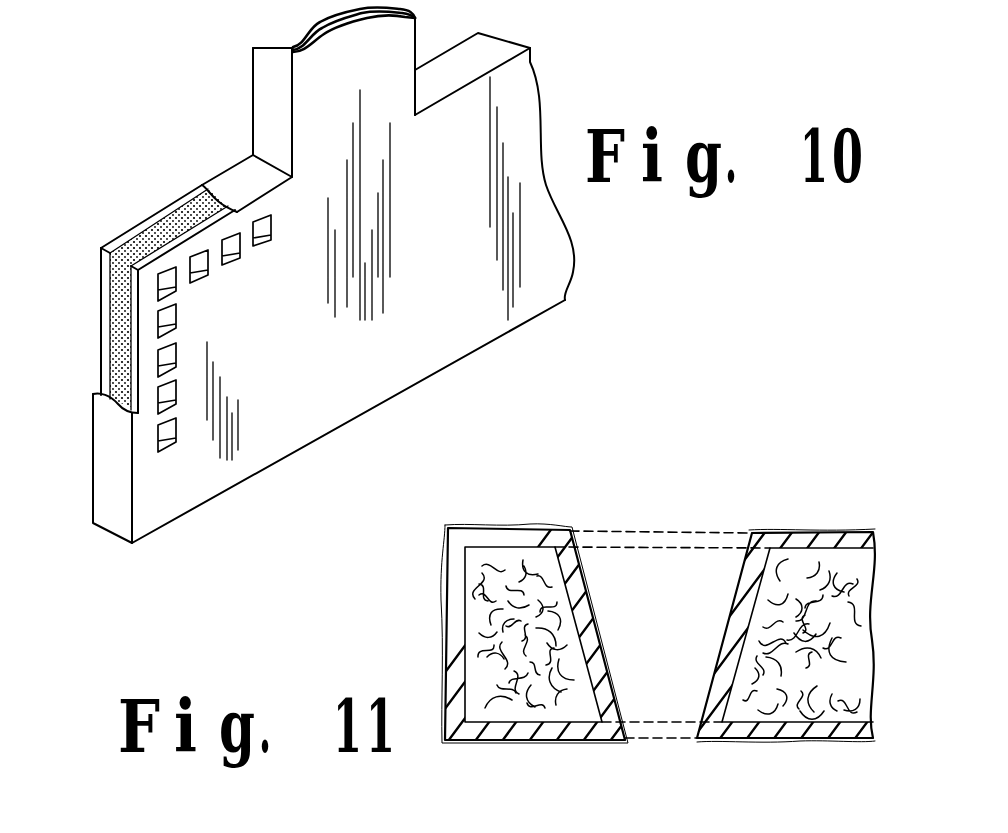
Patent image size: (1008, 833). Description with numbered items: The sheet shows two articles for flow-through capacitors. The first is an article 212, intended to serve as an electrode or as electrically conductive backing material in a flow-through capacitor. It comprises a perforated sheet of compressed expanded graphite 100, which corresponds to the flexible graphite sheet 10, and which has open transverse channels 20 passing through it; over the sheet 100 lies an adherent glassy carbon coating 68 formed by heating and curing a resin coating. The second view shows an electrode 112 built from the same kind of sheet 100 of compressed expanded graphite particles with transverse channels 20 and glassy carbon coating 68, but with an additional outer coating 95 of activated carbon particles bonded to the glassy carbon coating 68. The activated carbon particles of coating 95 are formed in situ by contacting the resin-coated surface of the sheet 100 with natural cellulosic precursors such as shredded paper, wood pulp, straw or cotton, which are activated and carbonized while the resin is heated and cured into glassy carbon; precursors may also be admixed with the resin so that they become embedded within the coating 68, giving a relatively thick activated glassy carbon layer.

In FIG. 10, the article 212 is at (468, 21).
In FIG. 10, the glassy carbon coating 68 is at (255, 170).
In FIG. 11, the glassy carbon coating 68 is at (523, 537).
In FIG. 10, the perforated sheet of compressed expanded graphite 100 is at (118, 318).
In FIG. 11, the perforated sheet of compressed expanded graphite 100 is at (482, 668).
In FIG. 10, the transverse channels 20 is at (200, 276).
In FIG. 11, the transverse channels 20 is at (682, 631).
In FIG. 11, the electrode 112 is at (676, 523).
In FIG. 11, the outer coating of activated carbon particles 95 is at (793, 530).
In FIG. 11, the sheet 10 is at (853, 600).